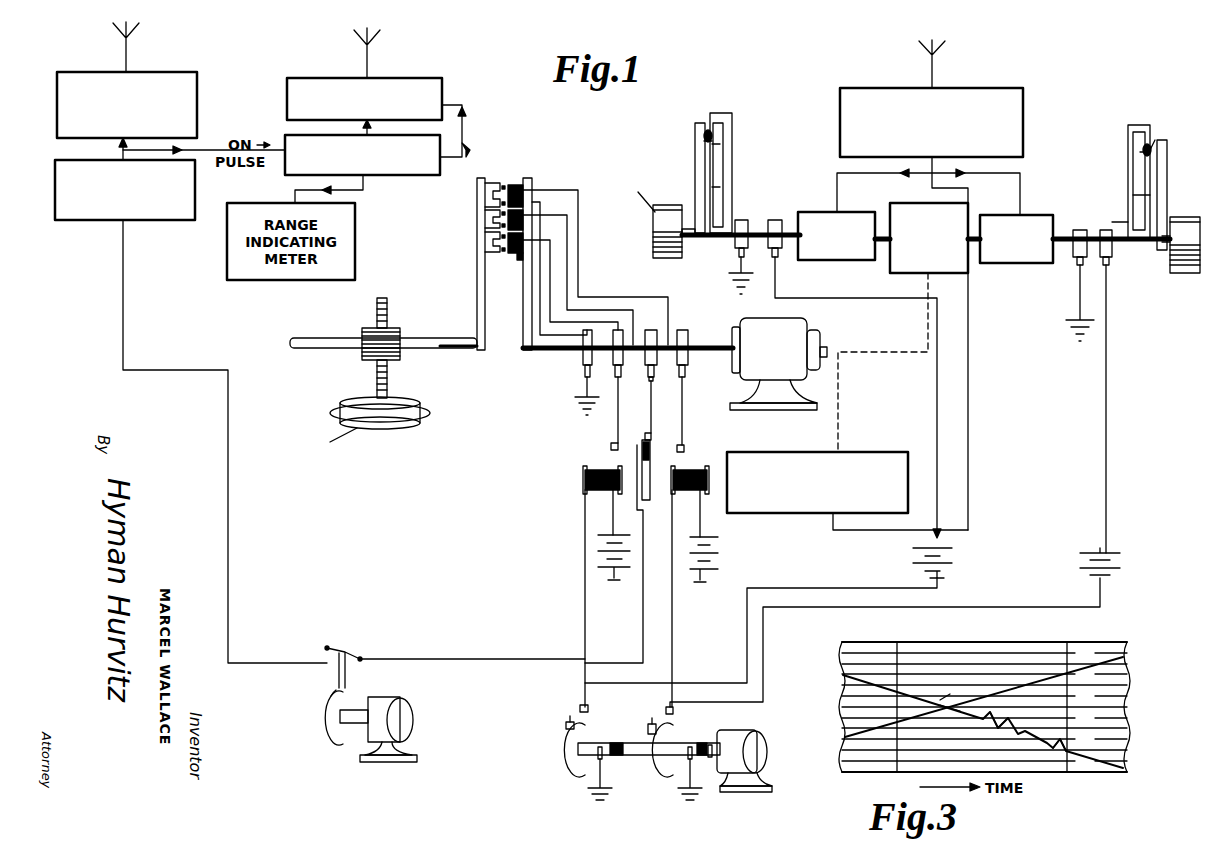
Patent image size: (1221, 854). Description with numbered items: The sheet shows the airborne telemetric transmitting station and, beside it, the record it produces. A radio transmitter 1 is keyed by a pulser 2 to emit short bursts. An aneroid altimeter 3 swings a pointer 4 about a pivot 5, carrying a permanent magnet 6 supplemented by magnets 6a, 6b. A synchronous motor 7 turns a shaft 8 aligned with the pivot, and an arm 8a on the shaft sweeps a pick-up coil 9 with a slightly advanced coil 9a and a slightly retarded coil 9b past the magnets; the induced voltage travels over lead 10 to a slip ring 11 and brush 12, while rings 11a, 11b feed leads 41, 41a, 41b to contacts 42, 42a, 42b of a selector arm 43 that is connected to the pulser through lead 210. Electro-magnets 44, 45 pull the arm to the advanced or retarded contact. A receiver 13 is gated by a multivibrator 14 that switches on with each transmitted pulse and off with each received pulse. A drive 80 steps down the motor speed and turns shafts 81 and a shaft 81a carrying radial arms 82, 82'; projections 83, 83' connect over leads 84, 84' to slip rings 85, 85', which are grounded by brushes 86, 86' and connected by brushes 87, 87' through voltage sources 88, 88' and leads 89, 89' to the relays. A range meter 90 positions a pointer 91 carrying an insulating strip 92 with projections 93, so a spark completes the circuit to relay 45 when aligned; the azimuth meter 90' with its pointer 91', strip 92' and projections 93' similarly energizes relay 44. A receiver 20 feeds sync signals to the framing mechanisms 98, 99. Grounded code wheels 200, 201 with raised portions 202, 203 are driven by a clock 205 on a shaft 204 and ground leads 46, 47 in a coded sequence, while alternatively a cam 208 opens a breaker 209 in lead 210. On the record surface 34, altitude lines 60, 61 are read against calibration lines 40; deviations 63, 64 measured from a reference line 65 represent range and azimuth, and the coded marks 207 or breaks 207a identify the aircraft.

In FIG. 1, the radio transmitter 1 is at (197, 98).
In FIG. 1, the pulser 2 is at (195, 197).
In FIG. 1, the altimeter 3 is at (430, 405).
In FIG. 1, the pointer 4 is at (485, 293).
In FIG. 1, the pivot 5 is at (458, 350).
In FIG. 1, the permanent magnet 6 is at (487, 221).
In FIG. 1, the additional magnet 6a is at (489, 247).
In FIG. 1, the additional magnet 6b is at (496, 184).
In FIG. 1, the synchronous motor 7 is at (808, 334).
In FIG. 1, the shaft 8 is at (705, 347).
In FIG. 1, the arm 8a is at (525, 300).
In FIG. 1, the pick-up coil 9 is at (567, 219).
In FIG. 1, the pick-up coil 9a is at (517, 261).
In FIG. 1, the pick-up coil 9b is at (518, 185).
In FIG. 1, the lead 10 is at (567, 244).
In FIG. 1, the slip ring 11 is at (650, 330).
In FIG. 1, the slip ring 11a is at (617, 328).
In FIG. 1, the slip ring 11b is at (690, 326).
In FIG. 1, the brush 12 is at (650, 378).
In FIG. 1, the receiver 13 is at (442, 90).
In FIG. 1, the multivibrator 14 is at (428, 175).
In FIG. 1, the receiver 20 is at (1023, 148).
In FIG. 1, the lead 41 is at (650, 402).
In FIG. 1, the lead 41a is at (614, 412).
In FIG. 1, the lead 41b is at (684, 400).
In FIG. 1, the contact 42 is at (652, 433).
In FIG. 1, the contact 42a is at (610, 450).
In FIG. 1, the contact 42b is at (686, 449).
In FIG. 1, the selector arm 43 is at (652, 468).
In FIG. 1, the electro-magnet 44 is at (585, 486).
In FIG. 1, the electro-magnet 45 is at (705, 490).
In FIG. 1, the lead 46 is at (581, 700).
In FIG. 1, the lead 47 is at (667, 707).
In FIG. 1, the drive 80 is at (897, 275).
In FIG. 1, the shafts 81 is at (972, 255).
In FIG. 1, the shaft 81a is at (1060, 235).
In FIG. 1, the radial arm 82 is at (1122, 181).
In FIG. 1, the sharp metallic projections 83 is at (1124, 158).
In FIG. 1, the leads 84 is at (1123, 185).
In FIG. 1, the slip rings 85 is at (1107, 233).
In FIG. 1, the brush 86 is at (1072, 285).
In FIG. 1, the brush 87 is at (1125, 409).
In FIG. 1, the source of voltage 88 is at (1114, 561).
In FIG. 1, the source of voltage 88' is at (947, 553).
In FIG. 1, the lead 89 is at (885, 642).
In FIG. 1, the lead 89' is at (761, 624).
In FIG. 1, the meter 90 is at (1169, 266).
In FIG. 1, the azimuth reading meter 90' is at (641, 220).
In FIG. 1, the pointer 91 is at (1165, 187).
In FIG. 1, the pointer 91' is at (683, 178).
In FIG. 1, the strip of insulating material 92 is at (1173, 152).
In FIG. 1, the strip of insulating material 92' is at (692, 128).
In FIG. 1, the sharp projections 93 is at (1164, 125).
In FIG. 1, the sharp projections 93' is at (683, 139).
In FIG. 1, the radial arm 82' is at (742, 171).
In FIG. 1, the sharp metallic projections 83' is at (739, 145).
In FIG. 1, the leads 84' is at (735, 177).
In FIG. 1, the slip rings 85' is at (757, 223).
In FIG. 1, the brush 86' is at (728, 274).
In FIG. 1, the brush 87' is at (856, 393).
In FIG. 1, the framing mechanism 98 is at (878, 450).
In FIG. 1, the synchronizing mechanism 99 is at (1025, 215).
In FIG. 1, the code wheel 200 is at (570, 757).
In FIG. 1, the code wheel 201 is at (665, 762).
In FIG. 1, the raised portion 202 is at (565, 727).
In FIG. 1, the raised portion 203 is at (650, 728).
In FIG. 1, the brush 204 is at (712, 758).
In FIG. 1, the clock mechanism 205 is at (675, 710).
In FIG. 1, the clock driven cam 208 is at (335, 735).
In FIG. 1, the circuit maker and breaker 209 is at (344, 653).
In FIG. 1, the lead 210 is at (228, 572).
In FIG. 3, the record receiving surface 34 is at (1008, 640).
In FIG. 3, the altitude calibration lines 40 is at (862, 660).
In FIG. 3, the altitude representative record 60 is at (940, 719).
In FIG. 3, the altitude representative record 61 is at (945, 708).
In FIG. 3, the deviation 63 is at (1049, 754).
In FIG. 3, the deviation 64 is at (988, 722).
In FIG. 3, the reference line 65 is at (1066, 648).
In FIG. 3, the aircraft identifying record 207 is at (1012, 735).
In FIG. 3, the coded breaks 207a is at (1028, 686).